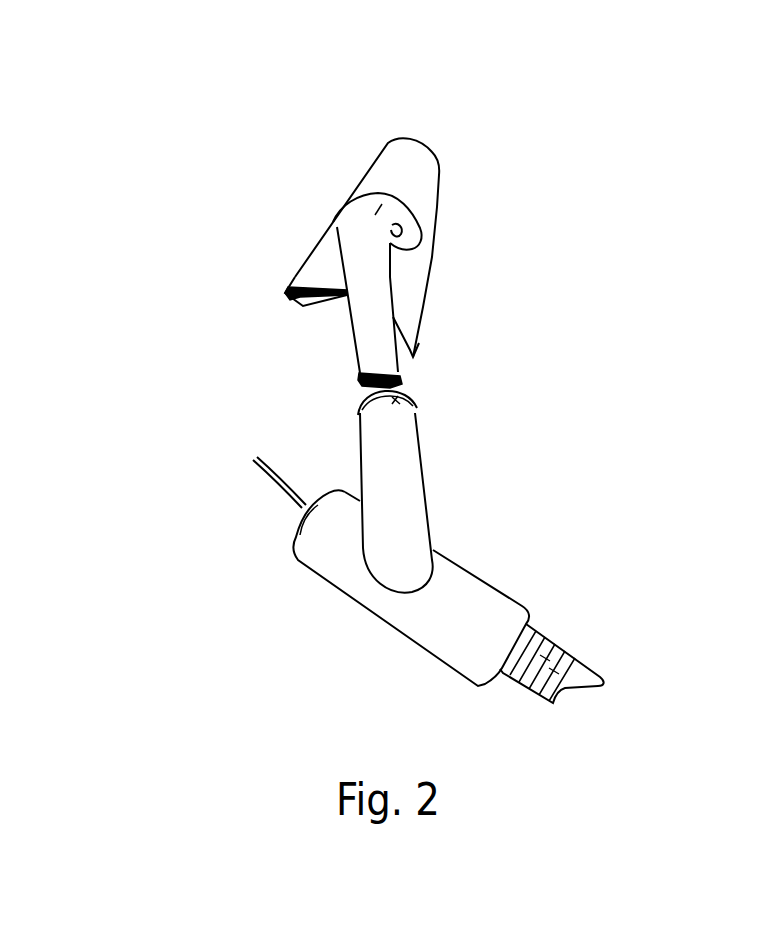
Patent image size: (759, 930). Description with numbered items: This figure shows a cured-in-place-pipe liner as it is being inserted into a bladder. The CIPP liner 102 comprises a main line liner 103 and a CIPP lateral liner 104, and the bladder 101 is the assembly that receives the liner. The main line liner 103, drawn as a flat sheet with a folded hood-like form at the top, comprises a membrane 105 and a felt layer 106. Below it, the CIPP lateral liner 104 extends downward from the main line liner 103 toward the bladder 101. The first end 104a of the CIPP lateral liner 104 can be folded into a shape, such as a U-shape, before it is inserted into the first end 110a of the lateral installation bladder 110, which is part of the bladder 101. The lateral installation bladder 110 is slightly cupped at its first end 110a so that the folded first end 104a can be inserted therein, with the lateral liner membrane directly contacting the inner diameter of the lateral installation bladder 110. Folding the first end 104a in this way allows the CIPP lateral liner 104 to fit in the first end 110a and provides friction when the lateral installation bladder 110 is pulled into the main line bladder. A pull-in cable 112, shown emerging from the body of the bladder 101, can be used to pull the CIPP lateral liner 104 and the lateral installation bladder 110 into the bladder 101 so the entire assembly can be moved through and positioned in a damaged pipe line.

The bladder 101 is at (457, 593).
The CIPP liner 102 is at (307, 207).
The main line liner 103 is at (437, 165).
The CIPP lateral liner 104 is at (345, 272).
The first end of CIPP lateral liner 104a is at (402, 373).
The membrane 105 is at (397, 170).
The felt layer 106 is at (306, 298).
The lateral installation bladder 110 is at (397, 518).
The first end of lateral installation bladder 110a is at (413, 397).
The pull-in cable 112 is at (280, 495).